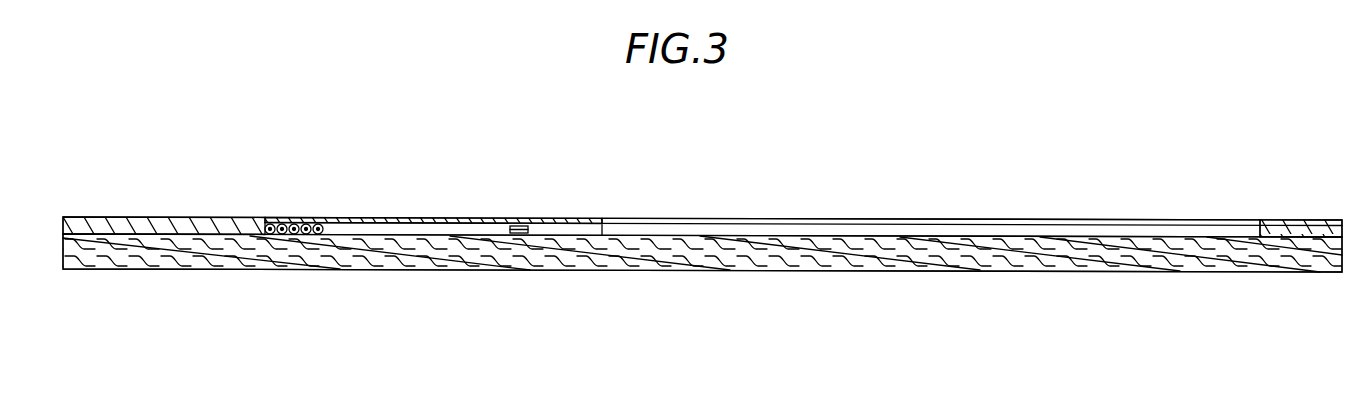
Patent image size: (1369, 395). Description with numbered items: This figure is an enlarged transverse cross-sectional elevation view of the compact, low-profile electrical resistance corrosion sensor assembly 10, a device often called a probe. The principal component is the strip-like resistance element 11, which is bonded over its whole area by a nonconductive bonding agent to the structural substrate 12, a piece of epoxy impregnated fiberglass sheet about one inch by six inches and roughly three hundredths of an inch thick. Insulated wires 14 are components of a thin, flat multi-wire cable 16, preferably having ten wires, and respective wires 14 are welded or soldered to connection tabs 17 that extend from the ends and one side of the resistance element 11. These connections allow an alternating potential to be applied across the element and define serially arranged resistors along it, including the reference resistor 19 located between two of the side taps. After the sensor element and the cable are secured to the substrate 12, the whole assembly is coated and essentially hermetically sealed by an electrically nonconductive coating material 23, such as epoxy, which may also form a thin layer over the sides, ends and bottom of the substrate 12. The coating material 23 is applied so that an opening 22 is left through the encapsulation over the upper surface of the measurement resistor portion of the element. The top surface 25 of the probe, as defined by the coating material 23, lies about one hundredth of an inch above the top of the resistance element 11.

The sensor assembly 10 is at (892, 178).
The resistance element 11 is at (984, 228).
The structural substrate 12 is at (612, 263).
The insulated wires 14 is at (409, 232).
The multi-wire cable 16 is at (280, 220).
The connection tabs 17 is at (517, 224).
The reference resistor 19 is at (1120, 230).
The opening 22 is at (1260, 222).
The electrically nonconductive coating material 23 is at (90, 223).
The top surface 25 is at (712, 223).